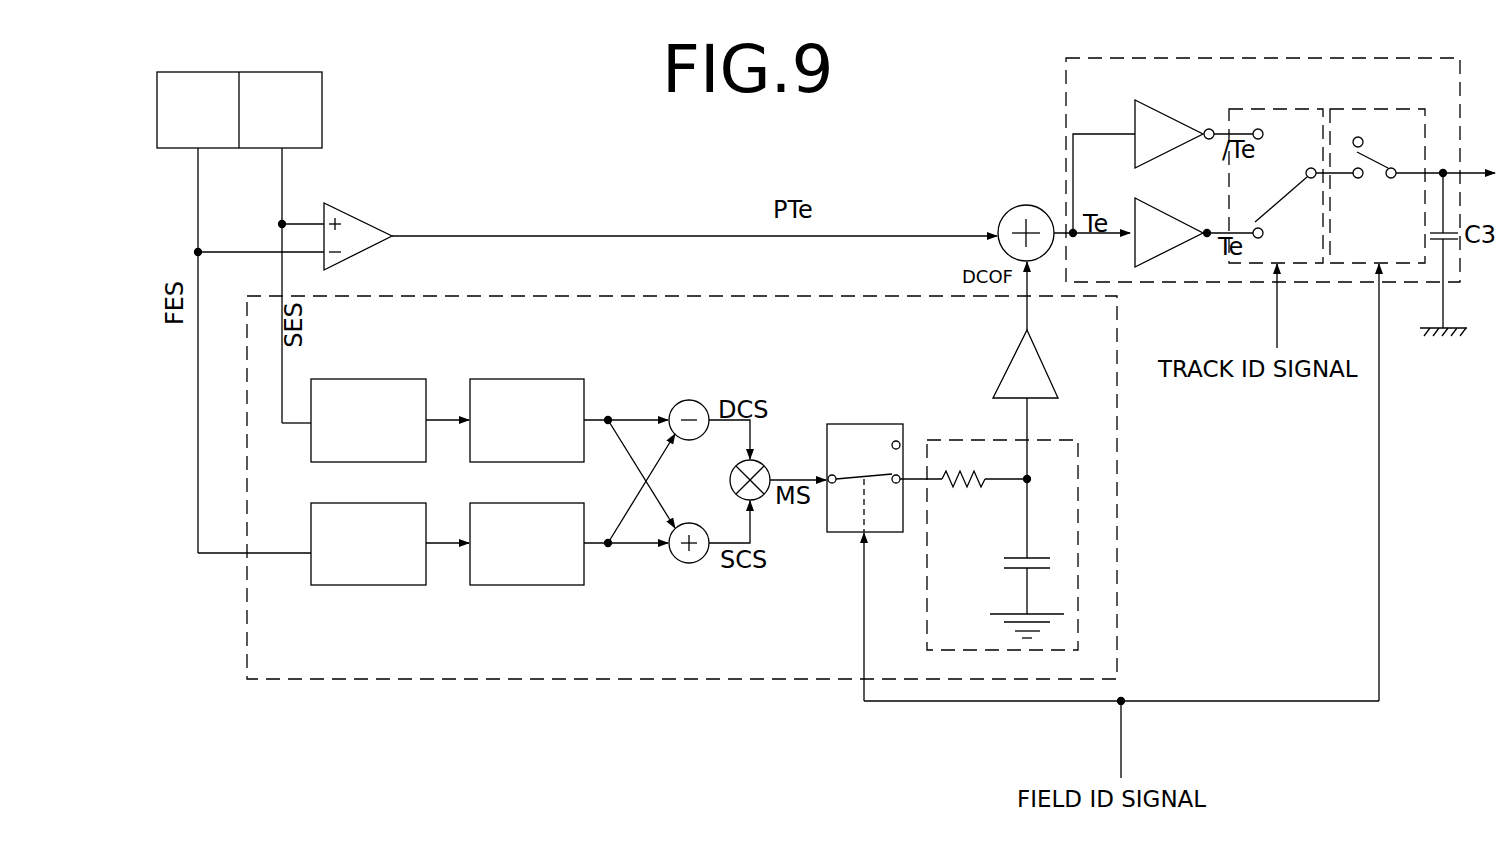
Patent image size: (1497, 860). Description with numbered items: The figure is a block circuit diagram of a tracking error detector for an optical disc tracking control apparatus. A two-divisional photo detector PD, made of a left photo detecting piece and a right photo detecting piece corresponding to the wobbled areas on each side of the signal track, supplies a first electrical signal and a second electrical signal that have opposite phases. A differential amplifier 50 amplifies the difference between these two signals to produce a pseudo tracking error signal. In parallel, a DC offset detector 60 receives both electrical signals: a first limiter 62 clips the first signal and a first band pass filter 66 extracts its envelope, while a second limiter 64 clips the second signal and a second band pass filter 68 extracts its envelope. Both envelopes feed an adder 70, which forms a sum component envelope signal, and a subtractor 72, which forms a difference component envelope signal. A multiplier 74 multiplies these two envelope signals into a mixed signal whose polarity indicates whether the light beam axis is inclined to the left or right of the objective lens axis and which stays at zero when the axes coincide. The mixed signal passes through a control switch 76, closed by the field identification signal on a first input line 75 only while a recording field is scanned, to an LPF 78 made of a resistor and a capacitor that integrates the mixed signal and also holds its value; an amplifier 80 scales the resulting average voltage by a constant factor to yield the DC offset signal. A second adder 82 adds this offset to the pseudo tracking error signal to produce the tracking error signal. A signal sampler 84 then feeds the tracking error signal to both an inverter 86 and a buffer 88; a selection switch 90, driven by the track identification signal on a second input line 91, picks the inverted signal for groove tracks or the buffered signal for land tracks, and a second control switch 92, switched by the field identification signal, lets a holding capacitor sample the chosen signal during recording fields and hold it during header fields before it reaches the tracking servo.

The photo detector PD is at (203, 68).
The differential amplifier 50 is at (356, 208).
The DC offset detector 60 is at (1110, 372).
The first limiter 62 is at (350, 500).
The second limiter 64 is at (350, 376).
The first band pass filter 66 is at (506, 500).
The second band pass filter 68 is at (506, 376).
The adder 70 is at (714, 518).
The subtractor 72 is at (714, 402).
The multiplier 74 is at (776, 470).
The first input line 75 is at (1121, 744).
The control switch 76 is at (864, 422).
The LPF 78 is at (958, 438).
The amplifier 80 is at (1010, 356).
The second adder 82 is at (1058, 200).
The signal sampler 84 is at (1372, 56).
The inverter 86 is at (1184, 118).
The buffer 88 is at (1184, 215).
The selection switch 90 is at (1254, 104).
The second input line 91 is at (1292, 318).
The second control switch 92 is at (1368, 104).